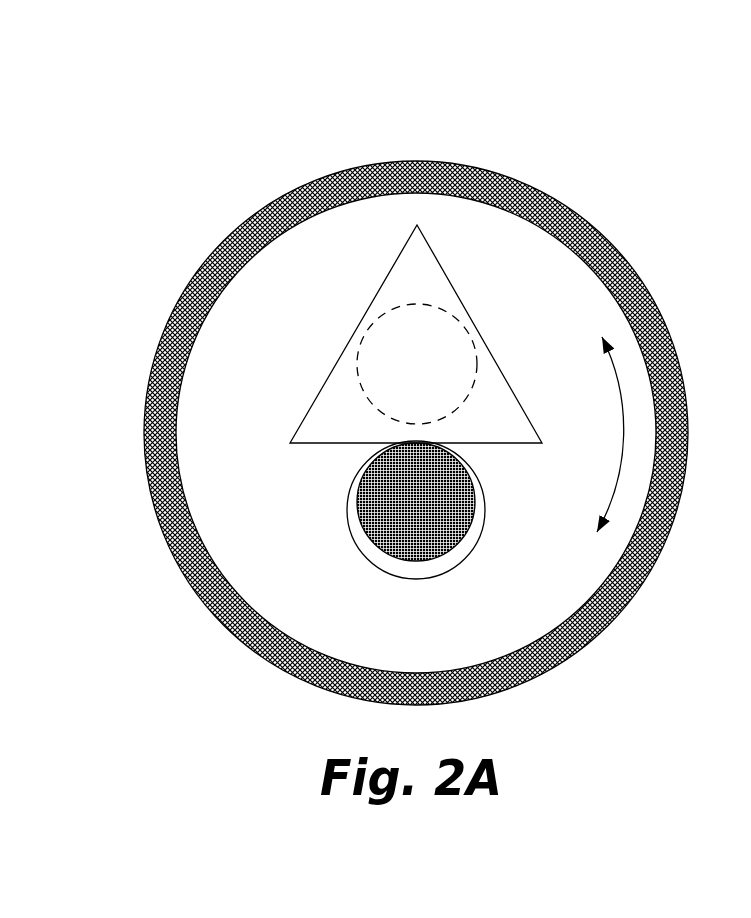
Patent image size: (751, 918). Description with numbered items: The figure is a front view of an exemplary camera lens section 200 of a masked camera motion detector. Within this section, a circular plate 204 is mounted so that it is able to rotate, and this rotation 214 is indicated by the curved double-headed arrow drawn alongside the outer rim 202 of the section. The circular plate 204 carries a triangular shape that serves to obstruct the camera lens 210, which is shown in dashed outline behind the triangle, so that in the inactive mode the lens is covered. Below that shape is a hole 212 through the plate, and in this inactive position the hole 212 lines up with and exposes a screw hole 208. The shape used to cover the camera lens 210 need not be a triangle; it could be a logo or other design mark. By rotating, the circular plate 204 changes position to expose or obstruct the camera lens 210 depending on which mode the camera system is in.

The camera lens section 200 is at (191, 86).
The outer ring / housing 202 is at (232, 227).
The circular plate 204 is at (298, 343).
The screw hole 208 is at (437, 517).
The camera lens 210 is at (460, 403).
The hole 212 is at (346, 481).
The rotation 214 is at (650, 483).